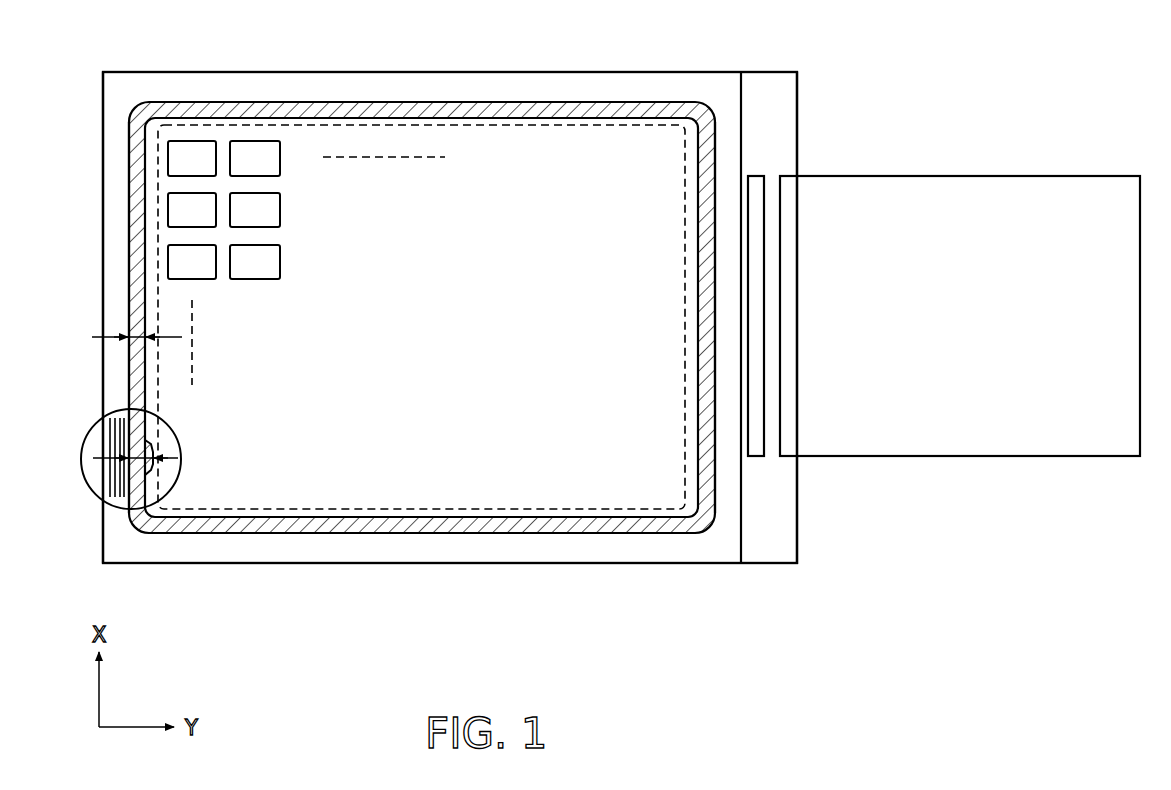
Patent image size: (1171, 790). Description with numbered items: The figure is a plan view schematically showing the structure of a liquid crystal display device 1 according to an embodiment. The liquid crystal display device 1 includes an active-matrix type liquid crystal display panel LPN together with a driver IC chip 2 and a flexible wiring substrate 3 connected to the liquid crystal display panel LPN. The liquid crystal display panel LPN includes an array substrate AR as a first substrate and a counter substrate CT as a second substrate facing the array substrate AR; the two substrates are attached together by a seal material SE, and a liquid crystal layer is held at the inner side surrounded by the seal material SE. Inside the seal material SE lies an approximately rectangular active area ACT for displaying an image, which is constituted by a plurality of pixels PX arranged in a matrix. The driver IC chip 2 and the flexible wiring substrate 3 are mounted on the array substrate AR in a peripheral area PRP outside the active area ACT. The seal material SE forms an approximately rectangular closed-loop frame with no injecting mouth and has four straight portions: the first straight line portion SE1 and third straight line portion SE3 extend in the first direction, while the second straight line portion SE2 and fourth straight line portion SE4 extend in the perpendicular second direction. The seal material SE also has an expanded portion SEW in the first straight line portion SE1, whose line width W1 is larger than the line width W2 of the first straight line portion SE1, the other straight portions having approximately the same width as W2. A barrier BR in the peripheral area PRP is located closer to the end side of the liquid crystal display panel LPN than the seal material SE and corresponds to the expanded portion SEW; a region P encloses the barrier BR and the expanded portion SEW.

The liquid crystal display device 1 is at (824, 71).
The driver IC chip 2 is at (758, 176).
The flexible wiring substrate 3 is at (983, 191).
The pixel PX is at (194, 140).
The seal material SE is at (505, 99).
The first straight line portion SE1 is at (128, 233).
The second straight line portion SE2 is at (405, 102).
The third straight line portion SE3 is at (717, 170).
The fourth straight line portion SE4 is at (345, 534).
The expanded portion SEW is at (158, 463).
The line width of the expanded portion W1 is at (152, 450).
The line width of the first straight line portion W2 is at (130, 336).
The peripheral area PRP is at (123, 381).
The region P is at (93, 455).
The barrier BR is at (124, 487).
The active area ACT is at (497, 514).
The counter substrate CT is at (692, 552).
The array substrate AR is at (793, 532).
The liquid crystal display panel LPN is at (777, 566).